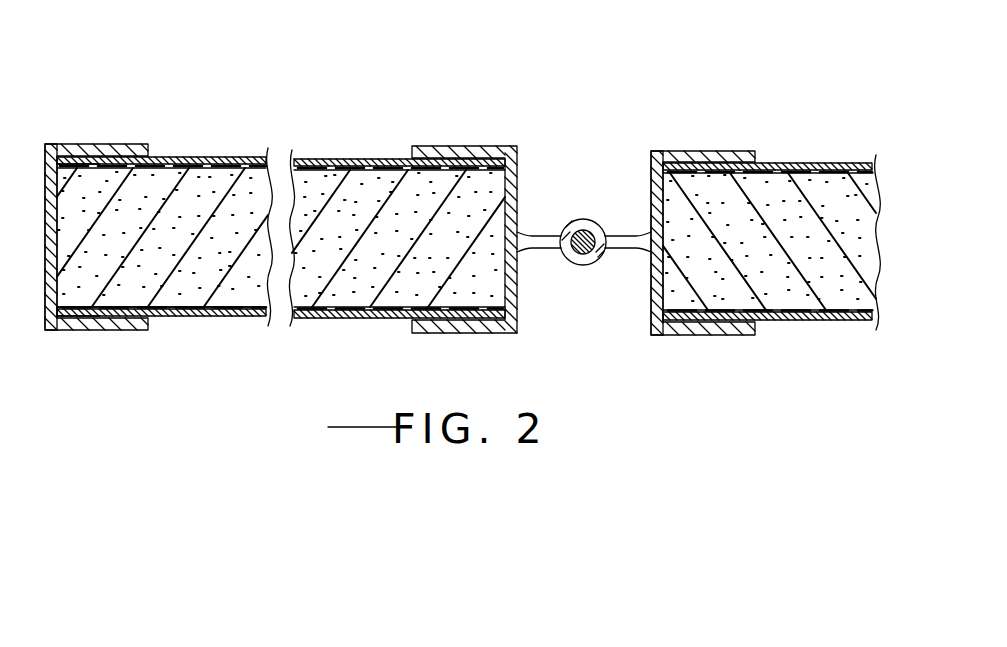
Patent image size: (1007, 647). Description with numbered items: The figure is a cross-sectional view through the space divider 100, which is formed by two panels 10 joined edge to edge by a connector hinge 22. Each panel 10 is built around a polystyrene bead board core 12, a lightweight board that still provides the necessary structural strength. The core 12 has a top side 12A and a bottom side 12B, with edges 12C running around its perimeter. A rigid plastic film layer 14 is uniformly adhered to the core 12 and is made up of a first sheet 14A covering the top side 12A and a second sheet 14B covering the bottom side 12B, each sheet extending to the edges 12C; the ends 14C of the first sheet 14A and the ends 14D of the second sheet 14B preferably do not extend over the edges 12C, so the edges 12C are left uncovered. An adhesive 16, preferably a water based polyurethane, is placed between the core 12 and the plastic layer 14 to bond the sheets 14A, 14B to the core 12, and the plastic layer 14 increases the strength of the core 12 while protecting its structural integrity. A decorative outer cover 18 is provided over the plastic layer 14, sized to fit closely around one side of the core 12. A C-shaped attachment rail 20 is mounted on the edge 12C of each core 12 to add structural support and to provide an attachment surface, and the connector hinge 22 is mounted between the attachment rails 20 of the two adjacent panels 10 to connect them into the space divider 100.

The space divider 100 is at (502, 88).
The panel 10 is at (218, 166).
The bead board core 12 is at (196, 290).
The top side 12A is at (180, 316).
The bottom side 12B is at (178, 161).
The edges 12C is at (48, 290).
The plastic film layer 14 is at (250, 319).
The first sheet 14A is at (308, 320).
The second sheet 14B is at (250, 162).
The ends of the first sheet 14C is at (67, 160).
The ends of the second sheet 14D is at (78, 331).
The adhesive 16 is at (360, 163).
The decorative outer cover 18 is at (388, 320).
The C-shaped attachment rail 20 is at (102, 150).
The connector hinge 22 is at (582, 219).